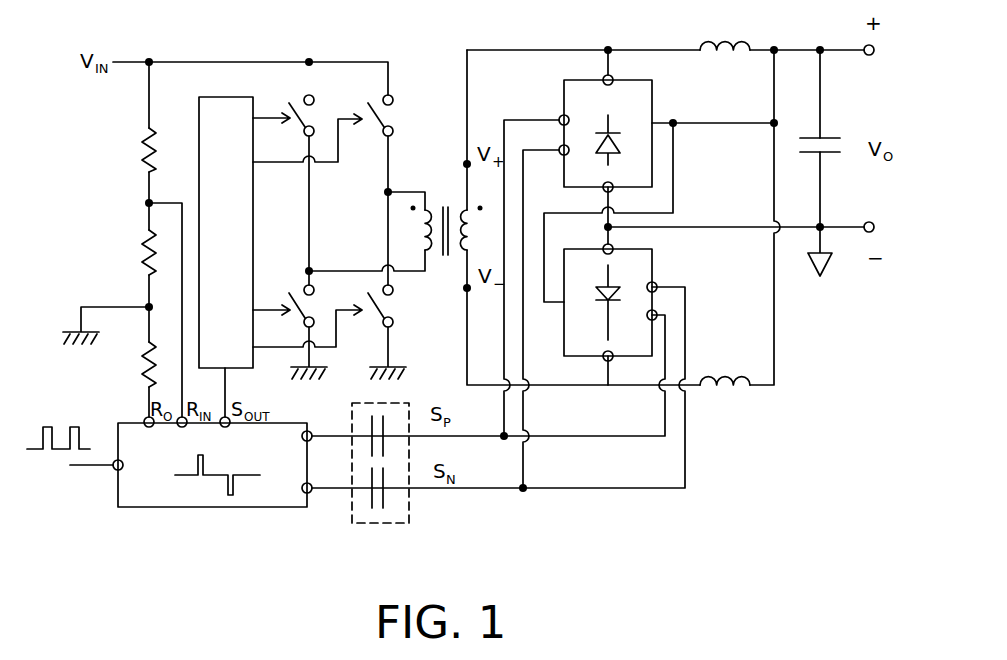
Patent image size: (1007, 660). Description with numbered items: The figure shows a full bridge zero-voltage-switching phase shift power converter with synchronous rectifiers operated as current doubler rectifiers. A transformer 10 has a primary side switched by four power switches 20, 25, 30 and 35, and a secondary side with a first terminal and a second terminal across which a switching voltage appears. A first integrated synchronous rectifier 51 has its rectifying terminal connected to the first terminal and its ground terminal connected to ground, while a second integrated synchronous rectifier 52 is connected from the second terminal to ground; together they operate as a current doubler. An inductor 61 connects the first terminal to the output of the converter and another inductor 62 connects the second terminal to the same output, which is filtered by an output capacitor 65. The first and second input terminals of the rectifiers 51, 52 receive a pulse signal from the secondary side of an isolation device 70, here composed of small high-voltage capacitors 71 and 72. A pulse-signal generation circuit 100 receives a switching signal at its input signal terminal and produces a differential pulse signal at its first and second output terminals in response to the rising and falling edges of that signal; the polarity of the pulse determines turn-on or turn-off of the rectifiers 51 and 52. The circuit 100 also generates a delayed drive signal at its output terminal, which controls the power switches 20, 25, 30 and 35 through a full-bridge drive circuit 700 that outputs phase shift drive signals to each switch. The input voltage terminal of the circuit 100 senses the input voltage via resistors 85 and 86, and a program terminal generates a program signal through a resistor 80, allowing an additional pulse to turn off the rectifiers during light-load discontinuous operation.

The transformer 10 is at (447, 200).
The power switch 20 is at (398, 115).
The power switch 25 is at (398, 306).
The power switch 30 is at (318, 109).
The power switch 35 is at (290, 295).
The first integrated synchronous rectifier 51 is at (644, 100).
The second integrated synchronous rectifier 52 is at (652, 262).
The inductor 61 is at (750, 31).
The inductor 62 is at (750, 366).
The output capacitor 65 is at (833, 132).
The isolation device 70 is at (412, 513).
The capacitor 71 is at (384, 414).
The capacitor 72 is at (380, 512).
The resistor 80 is at (133, 364).
The resistor 85 is at (132, 150).
The resistor 86 is at (133, 252).
The pulse-signal generation circuit 100 is at (132, 445).
The full-bridge drive circuit 700 is at (203, 135).